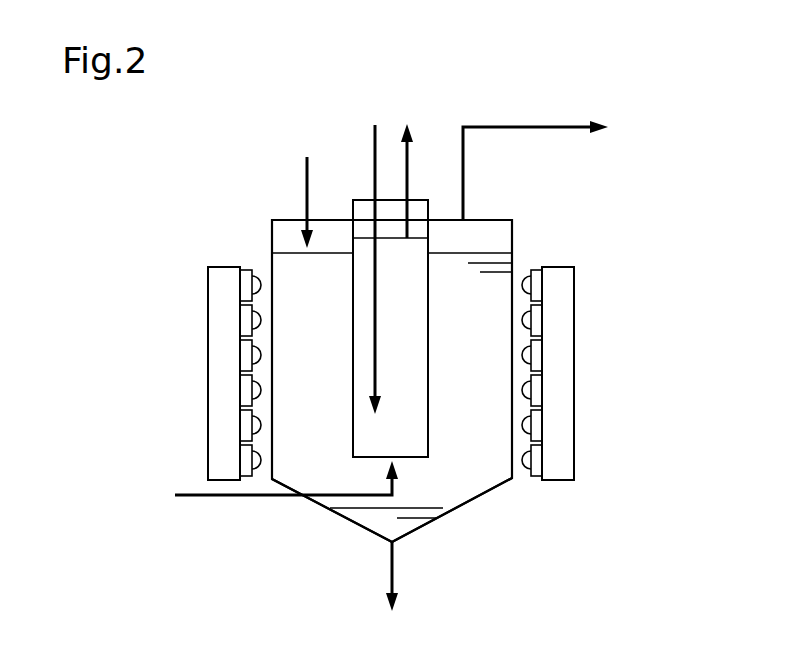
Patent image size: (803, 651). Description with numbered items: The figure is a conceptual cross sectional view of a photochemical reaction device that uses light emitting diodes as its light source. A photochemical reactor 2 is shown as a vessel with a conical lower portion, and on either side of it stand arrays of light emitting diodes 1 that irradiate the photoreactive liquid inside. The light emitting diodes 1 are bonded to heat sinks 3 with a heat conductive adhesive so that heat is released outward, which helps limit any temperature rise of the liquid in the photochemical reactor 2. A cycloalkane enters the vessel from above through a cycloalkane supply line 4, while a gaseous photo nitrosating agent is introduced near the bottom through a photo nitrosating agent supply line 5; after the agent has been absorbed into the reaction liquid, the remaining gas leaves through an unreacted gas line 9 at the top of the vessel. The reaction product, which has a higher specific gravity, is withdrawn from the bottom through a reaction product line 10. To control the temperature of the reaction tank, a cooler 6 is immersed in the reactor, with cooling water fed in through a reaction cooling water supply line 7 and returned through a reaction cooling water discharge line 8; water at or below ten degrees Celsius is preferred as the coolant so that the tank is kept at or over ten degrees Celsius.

The light emitting diodes 1 is at (516, 284).
The photochemical reactor 2 is at (470, 505).
The heat sinks 3 is at (560, 480).
The cycloalkane supply line 4 is at (305, 202).
The photo nitrosating agent supply line 5 is at (242, 498).
The cooler 6 is at (353, 347).
The reaction cooling water supply line 7 is at (375, 153).
The reaction cooling water discharge line 8 is at (408, 158).
The unreacted gas line 9 is at (572, 132).
The reaction product line 10 is at (388, 568).